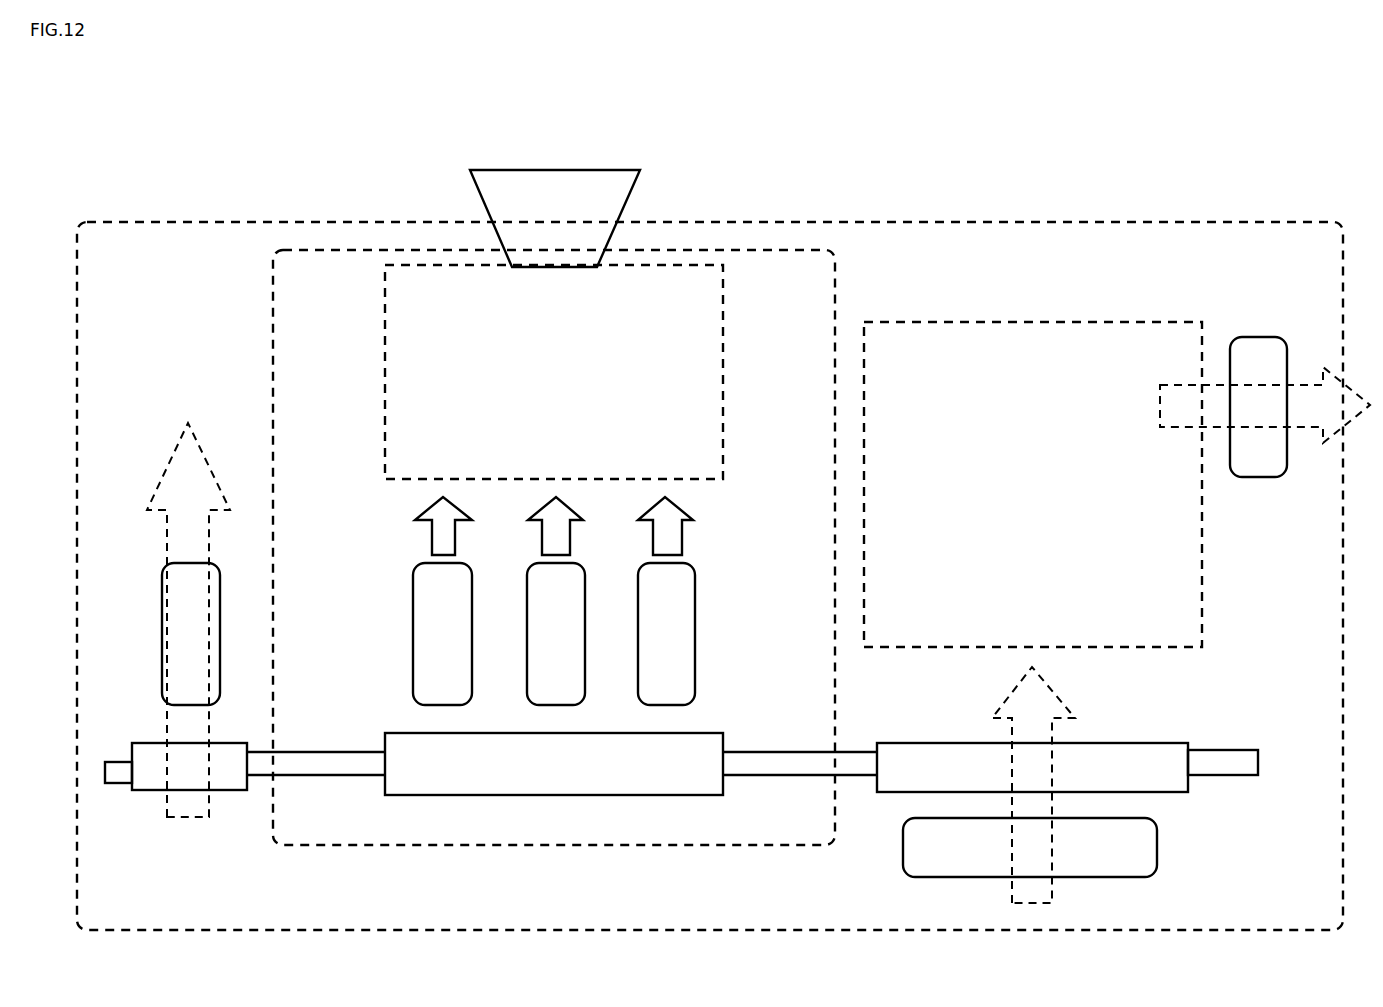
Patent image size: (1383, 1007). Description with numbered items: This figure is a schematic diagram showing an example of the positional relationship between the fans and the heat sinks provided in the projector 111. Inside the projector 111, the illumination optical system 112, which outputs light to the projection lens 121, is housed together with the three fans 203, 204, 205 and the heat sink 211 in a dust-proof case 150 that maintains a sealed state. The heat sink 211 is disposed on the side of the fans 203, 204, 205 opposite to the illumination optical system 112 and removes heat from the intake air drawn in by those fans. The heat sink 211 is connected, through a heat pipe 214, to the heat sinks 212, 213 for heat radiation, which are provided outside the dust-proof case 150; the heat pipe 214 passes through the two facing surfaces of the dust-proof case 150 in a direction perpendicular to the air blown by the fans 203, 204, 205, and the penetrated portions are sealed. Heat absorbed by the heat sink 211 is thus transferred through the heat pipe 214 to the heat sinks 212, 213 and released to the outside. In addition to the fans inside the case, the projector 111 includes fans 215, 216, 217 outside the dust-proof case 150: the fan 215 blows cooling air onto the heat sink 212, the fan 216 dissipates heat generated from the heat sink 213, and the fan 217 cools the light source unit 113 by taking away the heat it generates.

The projector 111 is at (1147, 222).
The illumination optical system 112 is at (437, 267).
The light source unit 113 is at (1013, 322).
The projection lens 121 is at (613, 180).
The dust-proof case 150 is at (715, 252).
The fan 203 is at (675, 667).
The fan 204 is at (545, 680).
The fan 205 is at (428, 603).
The heat sink 211 is at (548, 788).
The heat sink for heat radiation 212 is at (1135, 757).
The heat sink for heat radiation 213 is at (155, 780).
The heat pipe 214 is at (802, 770).
The fan 215 is at (1143, 848).
The fan 216 is at (170, 593).
The fan 217 is at (1250, 343).